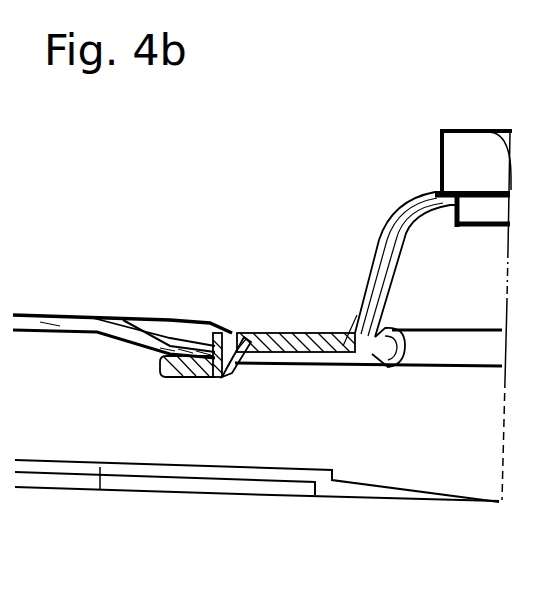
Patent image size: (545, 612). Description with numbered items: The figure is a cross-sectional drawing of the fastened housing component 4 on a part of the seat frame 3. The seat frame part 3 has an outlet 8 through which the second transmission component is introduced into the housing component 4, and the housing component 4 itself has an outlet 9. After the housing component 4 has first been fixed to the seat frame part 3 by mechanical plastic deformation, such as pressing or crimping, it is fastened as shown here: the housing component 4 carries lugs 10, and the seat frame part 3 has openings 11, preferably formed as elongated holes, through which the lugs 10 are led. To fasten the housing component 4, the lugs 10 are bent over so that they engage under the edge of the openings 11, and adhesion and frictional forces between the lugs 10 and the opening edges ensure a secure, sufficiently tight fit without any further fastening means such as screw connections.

The part of the seat frame 3 is at (296, 380).
The housing component 4 is at (411, 278).
The outlet 8 is at (368, 348).
The outlet 9 is at (489, 212).
The lugs 10 is at (172, 375).
The openings 11 is at (222, 346).